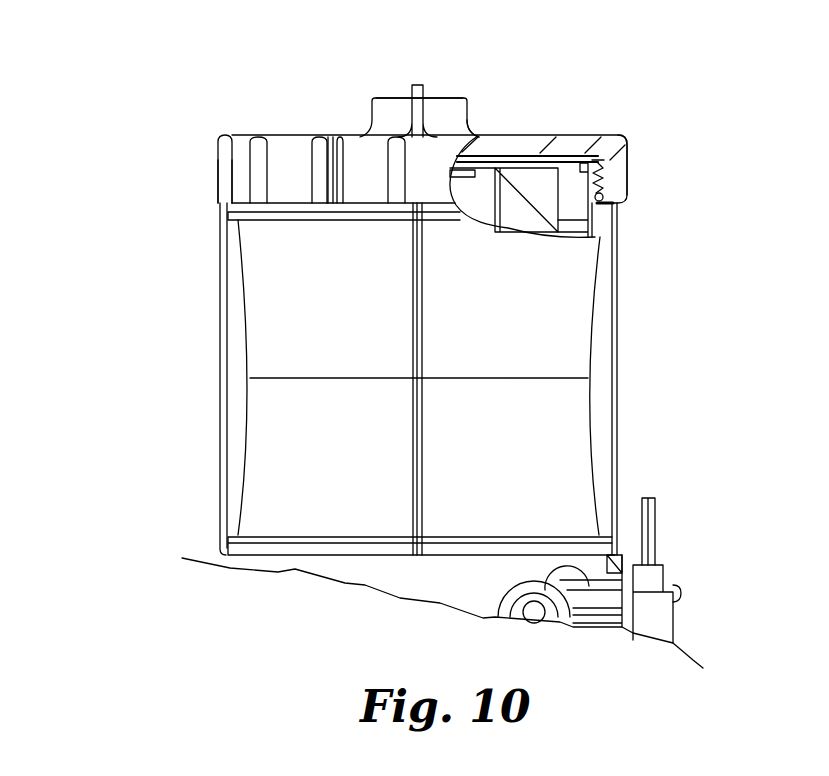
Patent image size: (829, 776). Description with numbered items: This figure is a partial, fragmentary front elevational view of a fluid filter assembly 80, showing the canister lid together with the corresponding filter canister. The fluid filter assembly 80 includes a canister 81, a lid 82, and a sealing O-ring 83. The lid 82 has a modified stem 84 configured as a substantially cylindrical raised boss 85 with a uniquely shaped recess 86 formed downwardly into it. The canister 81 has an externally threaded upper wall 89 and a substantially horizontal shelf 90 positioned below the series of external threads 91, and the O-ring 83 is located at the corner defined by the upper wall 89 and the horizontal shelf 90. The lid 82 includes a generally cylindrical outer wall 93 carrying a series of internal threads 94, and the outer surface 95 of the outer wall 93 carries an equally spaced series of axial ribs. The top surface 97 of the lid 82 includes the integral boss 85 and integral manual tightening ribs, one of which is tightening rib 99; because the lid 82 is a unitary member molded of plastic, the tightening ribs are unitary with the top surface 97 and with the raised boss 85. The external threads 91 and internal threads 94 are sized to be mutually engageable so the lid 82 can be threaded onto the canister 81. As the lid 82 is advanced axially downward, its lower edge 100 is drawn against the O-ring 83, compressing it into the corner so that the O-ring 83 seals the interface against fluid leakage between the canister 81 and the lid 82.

The fluid filter assembly 80 is at (170, 100).
The canister 81 is at (535, 421).
The lid 82 is at (233, 163).
The sealing O-ring 83 is at (601, 180).
The modified stem 84 is at (363, 110).
The raised boss 85 is at (479, 100).
The recess 86 is at (438, 98).
The upper wall 89 is at (581, 163).
The horizontal shelf 90 is at (613, 213).
The external threads 91 is at (597, 207).
The outer wall 93 is at (627, 156).
The internal threads 94 is at (597, 160).
The outer surface 95 is at (273, 177).
The top surface 97 is at (280, 134).
The manual tightening rib 99 is at (415, 117).
The lower edge 100 is at (609, 204).